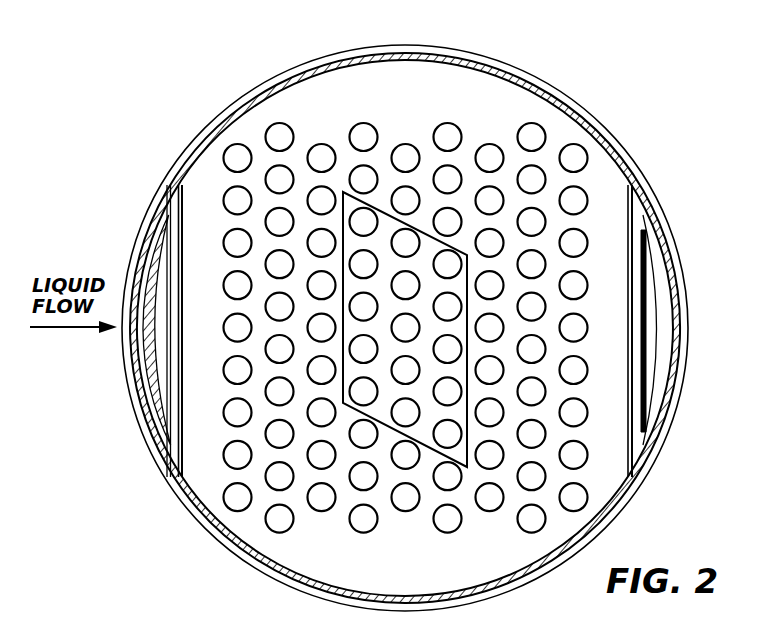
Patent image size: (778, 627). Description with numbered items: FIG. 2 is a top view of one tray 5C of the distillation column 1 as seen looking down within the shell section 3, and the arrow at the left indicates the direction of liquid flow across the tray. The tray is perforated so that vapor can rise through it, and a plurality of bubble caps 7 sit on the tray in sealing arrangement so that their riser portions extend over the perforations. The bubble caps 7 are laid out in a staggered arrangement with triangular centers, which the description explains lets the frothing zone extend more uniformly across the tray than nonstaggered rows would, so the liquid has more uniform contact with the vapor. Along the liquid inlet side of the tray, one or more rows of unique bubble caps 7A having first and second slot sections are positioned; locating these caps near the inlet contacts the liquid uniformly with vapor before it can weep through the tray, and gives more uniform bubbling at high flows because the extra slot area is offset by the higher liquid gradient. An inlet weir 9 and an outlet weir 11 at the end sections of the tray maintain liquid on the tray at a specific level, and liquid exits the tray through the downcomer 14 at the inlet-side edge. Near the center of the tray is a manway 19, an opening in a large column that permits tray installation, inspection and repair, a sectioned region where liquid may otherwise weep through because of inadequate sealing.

The distillation column 1 is at (676, 447).
The shell section 3 is at (597, 131).
The tray 5C is at (606, 179).
The bubble caps 7 is at (318, 205).
The bubble caps with second slot openings 7A is at (279, 140).
The inlet weir 9 is at (184, 394).
The outlet weir 11 is at (627, 252).
The downcomer 14 is at (152, 376).
The manway 19 is at (383, 213).